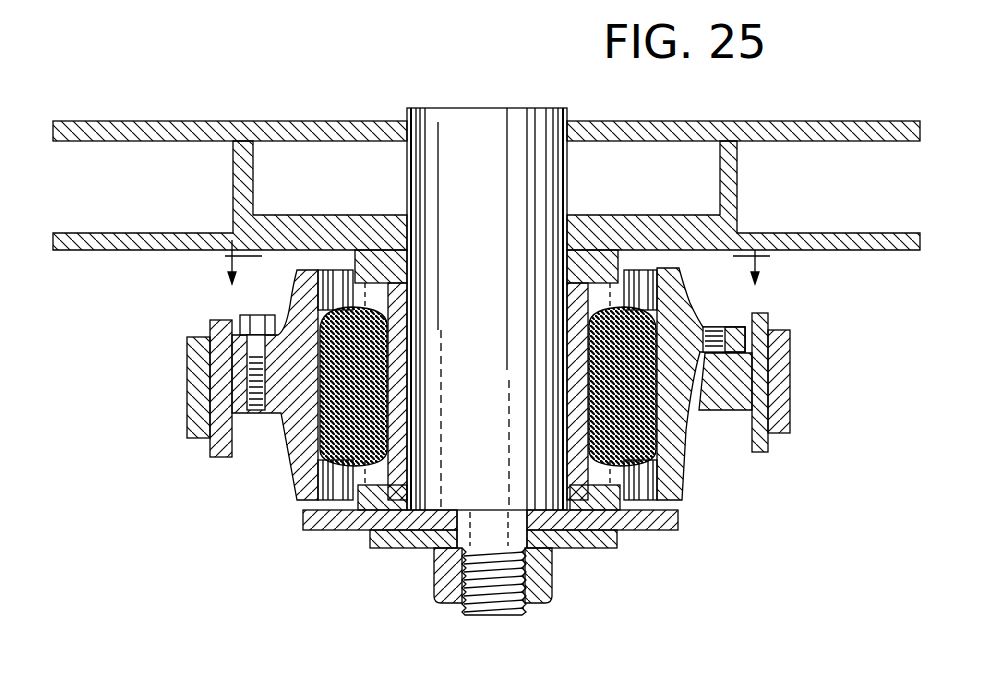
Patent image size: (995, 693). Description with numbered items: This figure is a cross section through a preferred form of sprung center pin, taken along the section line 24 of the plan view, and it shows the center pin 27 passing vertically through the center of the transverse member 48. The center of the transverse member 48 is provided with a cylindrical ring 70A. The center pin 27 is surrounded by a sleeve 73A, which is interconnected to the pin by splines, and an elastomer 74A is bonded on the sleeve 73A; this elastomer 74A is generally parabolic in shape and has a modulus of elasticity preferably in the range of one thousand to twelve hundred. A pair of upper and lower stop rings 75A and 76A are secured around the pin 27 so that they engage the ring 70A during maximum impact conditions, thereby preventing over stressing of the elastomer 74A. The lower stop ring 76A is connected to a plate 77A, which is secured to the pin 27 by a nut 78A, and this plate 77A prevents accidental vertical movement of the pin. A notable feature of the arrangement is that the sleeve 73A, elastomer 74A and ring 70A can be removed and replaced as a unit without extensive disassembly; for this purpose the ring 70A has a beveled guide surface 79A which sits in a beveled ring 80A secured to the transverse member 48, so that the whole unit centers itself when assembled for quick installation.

The section line 24- 24 is at (495, 264).
The center pin 27 is at (480, 311).
The transverse member 48 is at (800, 350).
The cylindrical ring 70A is at (680, 486).
The sleeve 73A is at (641, 478).
The elastomer 74A is at (322, 480).
The upper stop ring 75A is at (620, 250).
The lower stop ring 76A is at (353, 494).
The plate 77A is at (372, 523).
The nut 78A is at (447, 602).
The beveled guide surface 79A is at (700, 412).
The beveled ring 80A is at (750, 412).